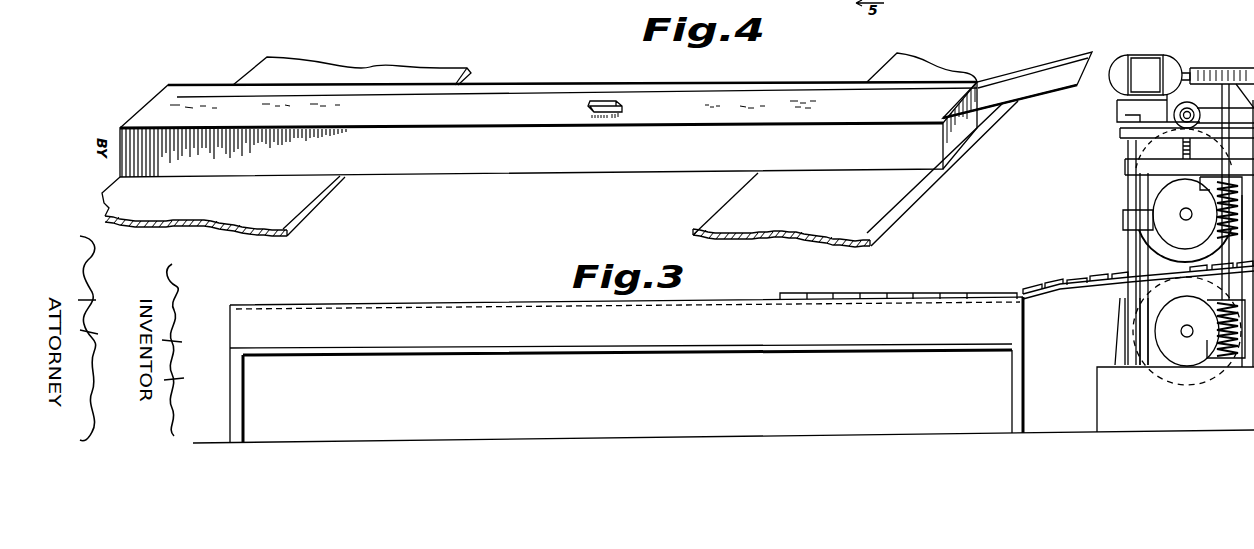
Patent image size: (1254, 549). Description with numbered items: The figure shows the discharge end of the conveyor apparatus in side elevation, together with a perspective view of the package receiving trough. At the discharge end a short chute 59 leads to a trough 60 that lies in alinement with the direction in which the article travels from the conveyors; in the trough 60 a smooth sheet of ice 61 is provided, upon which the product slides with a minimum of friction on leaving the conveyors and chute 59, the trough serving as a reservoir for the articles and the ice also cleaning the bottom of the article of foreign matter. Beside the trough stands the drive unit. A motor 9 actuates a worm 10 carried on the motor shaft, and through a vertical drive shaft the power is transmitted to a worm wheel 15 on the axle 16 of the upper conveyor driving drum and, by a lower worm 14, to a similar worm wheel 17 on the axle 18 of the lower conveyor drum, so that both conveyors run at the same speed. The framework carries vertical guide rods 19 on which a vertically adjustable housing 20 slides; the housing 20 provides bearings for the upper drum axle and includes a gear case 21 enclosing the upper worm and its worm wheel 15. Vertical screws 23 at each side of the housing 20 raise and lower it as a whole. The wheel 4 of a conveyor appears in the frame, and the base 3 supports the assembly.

In FIG. 3, the base 3 is at (1175, 399).
In FIG. 3, the wheel 4 is at (1167, 293).
In FIG. 3, the motor 9 is at (1148, 63).
In FIG. 3, the worm 10 is at (1208, 68).
In FIG. 3, the lower worm 14 is at (1227, 353).
In FIG. 3, the worm wheel 15 is at (1185, 220).
In FIG. 3, the axle 16 is at (1186, 220).
In FIG. 3, the worm wheel 17 is at (1187, 331).
In FIG. 3, the axle 18 is at (1187, 337).
In FIG. 3, the vertical guide rods 19 is at (1130, 293).
In FIG. 3, the housing 20 is at (1122, 166).
In FIG. 3, the gear case 21 is at (1160, 202).
In FIG. 3, the vertical screws 23 is at (1183, 148).
In FIG. 4, the chute 59 is at (1035, 70).
In FIG. 3, the chute 59 is at (1057, 283).
In FIG. 4, the trough 60 is at (862, 167).
In FIG. 3, the trough 60 is at (937, 300).
In FIG. 4, the sheet of ice 61 is at (552, 100).